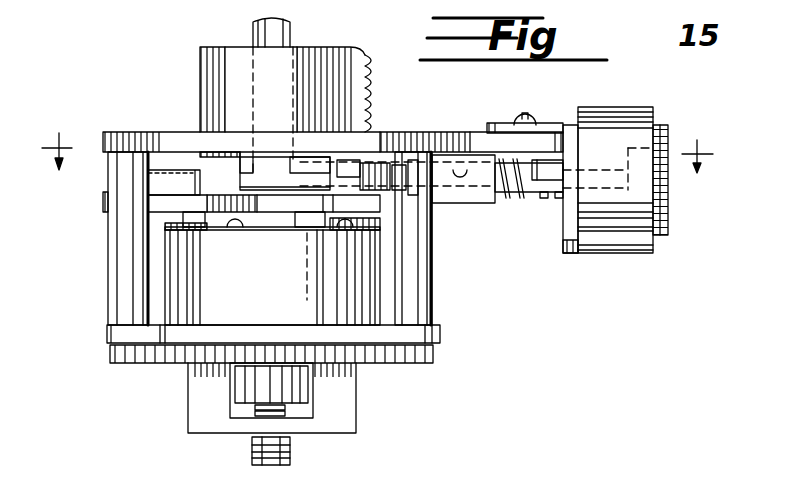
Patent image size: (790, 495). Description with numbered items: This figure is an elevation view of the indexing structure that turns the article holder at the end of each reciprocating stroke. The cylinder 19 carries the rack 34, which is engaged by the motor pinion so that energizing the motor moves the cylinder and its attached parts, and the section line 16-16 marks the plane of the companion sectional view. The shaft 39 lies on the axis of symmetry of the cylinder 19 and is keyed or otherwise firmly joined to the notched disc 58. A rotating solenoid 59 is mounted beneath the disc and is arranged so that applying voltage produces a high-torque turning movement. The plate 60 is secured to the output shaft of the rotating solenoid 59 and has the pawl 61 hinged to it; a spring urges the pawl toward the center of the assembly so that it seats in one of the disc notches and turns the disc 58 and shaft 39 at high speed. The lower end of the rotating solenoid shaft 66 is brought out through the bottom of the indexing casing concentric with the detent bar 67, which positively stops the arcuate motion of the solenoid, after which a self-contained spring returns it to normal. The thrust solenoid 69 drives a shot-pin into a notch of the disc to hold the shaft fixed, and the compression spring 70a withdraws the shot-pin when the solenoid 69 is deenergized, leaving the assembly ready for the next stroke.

The section line 16- 16 is at (377, 153).
The cylinder 19 is at (200, 90).
The rack 34 is at (372, 120).
The shaft 39 is at (291, 42).
The notched disc 58 is at (360, 190).
The rotating solenoid 59 is at (266, 285).
The plate 60 is at (335, 210).
The pawl 61 is at (172, 192).
The rotating solenoid shaft 66 is at (258, 407).
The detent bar 67 is at (292, 451).
The solenoid 69 is at (620, 253).
The compression spring 70a is at (504, 197).